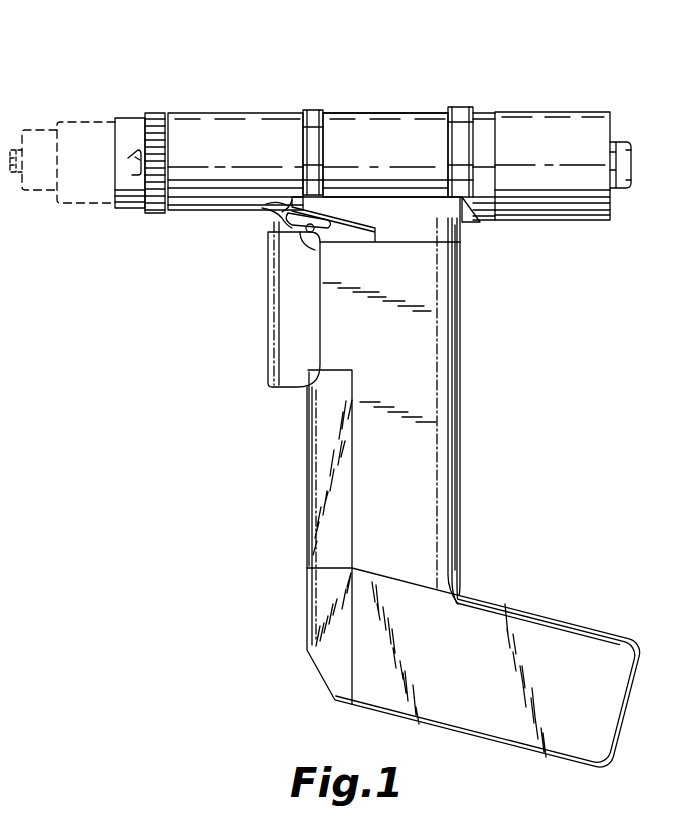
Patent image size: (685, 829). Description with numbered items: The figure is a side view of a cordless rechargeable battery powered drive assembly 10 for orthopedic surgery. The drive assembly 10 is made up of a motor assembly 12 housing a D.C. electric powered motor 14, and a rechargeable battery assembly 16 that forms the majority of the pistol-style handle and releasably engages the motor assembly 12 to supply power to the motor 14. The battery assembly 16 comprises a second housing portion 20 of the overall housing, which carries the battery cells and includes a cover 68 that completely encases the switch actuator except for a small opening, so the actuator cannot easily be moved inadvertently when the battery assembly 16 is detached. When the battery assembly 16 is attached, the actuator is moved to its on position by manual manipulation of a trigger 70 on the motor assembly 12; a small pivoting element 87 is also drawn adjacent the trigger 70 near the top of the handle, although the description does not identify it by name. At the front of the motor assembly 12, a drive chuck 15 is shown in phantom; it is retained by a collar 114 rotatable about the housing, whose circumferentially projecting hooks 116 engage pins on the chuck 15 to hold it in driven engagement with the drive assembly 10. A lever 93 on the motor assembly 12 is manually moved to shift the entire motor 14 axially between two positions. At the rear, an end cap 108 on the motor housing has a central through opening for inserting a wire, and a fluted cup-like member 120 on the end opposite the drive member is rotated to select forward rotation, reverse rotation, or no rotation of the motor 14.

The drive assembly 10 is at (437, 102).
The motor assembly 12 is at (368, 110).
The D.C. electric powered motor 14 is at (393, 122).
The drive chuck 15 is at (78, 122).
The rechargeable battery assembly 16 is at (468, 406).
The second housing portion 20 is at (457, 505).
The cover 68 is at (312, 475).
The trigger 70 is at (279, 337).
The trigger lever 87 is at (314, 231).
The lever 93 is at (285, 222).
The end cap 108 is at (630, 146).
The collar 114 is at (130, 210).
The hooks 116 is at (128, 158).
The fluted cup-like member 120 is at (566, 118).